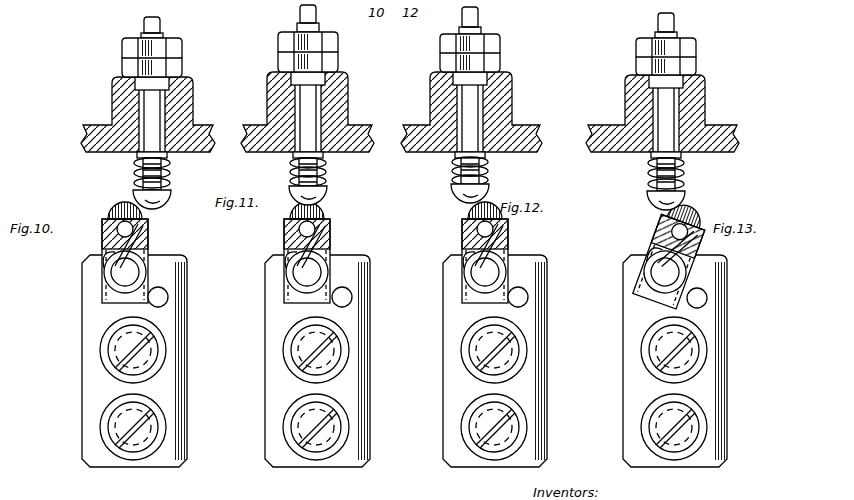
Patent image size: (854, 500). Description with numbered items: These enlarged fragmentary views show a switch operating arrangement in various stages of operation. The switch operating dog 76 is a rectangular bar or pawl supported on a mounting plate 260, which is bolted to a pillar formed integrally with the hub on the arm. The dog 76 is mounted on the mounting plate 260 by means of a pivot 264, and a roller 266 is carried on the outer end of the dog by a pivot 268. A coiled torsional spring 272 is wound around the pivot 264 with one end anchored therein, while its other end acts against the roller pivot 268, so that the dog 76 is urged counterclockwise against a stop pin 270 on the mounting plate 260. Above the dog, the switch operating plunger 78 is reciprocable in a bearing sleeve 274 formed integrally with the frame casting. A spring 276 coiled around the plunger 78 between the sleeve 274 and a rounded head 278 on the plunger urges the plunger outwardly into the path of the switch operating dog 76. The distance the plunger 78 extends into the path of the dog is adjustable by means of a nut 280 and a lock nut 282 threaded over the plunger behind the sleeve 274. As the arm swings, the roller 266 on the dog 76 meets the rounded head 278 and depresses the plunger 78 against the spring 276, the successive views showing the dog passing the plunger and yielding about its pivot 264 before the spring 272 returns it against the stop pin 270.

In FIG. 10, the switch operating dog 76 is at (150, 240).
In FIG. 11, the switch operating dog 76 is at (337, 243).
In FIG. 12, the switch operating dog 76 is at (462, 240).
In FIG. 13, the switch operating dog 76 is at (669, 261).
In FIG. 10, the switch operating plunger 78 is at (153, 115).
In FIG. 11, the switch operating plunger 78 is at (307, 107).
In FIG. 12, the switch operating plunger 78 is at (470, 107).
In FIG. 13, the switch operating plunger 78 is at (667, 108).
In FIG. 10, the mounting plate 260 is at (90, 323).
In FIG. 11, the mounting plate 260 is at (358, 333).
In FIG. 12, the mounting plate 260 is at (537, 343).
In FIG. 13, the mounting plate 260 is at (717, 347).
In FIG. 10, the pivot 264 is at (118, 278).
In FIG. 11, the pivot 264 is at (307, 272).
In FIG. 12, the pivot 264 is at (490, 272).
In FIG. 13, the pivot 264 is at (670, 275).
In FIG. 10, the roller 266 is at (127, 221).
In FIG. 11, the roller 266 is at (322, 213).
In FIG. 12, the roller 266 is at (503, 213).
In FIG. 13, the roller 266 is at (665, 220).
In FIG. 10, the pivot 268 is at (117, 222).
In FIG. 11, the pivot 268 is at (330, 228).
In FIG. 12, the pivot 268 is at (505, 230).
In FIG. 13, the pivot 268 is at (662, 233).
In FIG. 10, the stop pin 270 is at (167, 306).
In FIG. 11, the stop pin 270 is at (352, 300).
In FIG. 12, the stop pin 270 is at (527, 300).
In FIG. 13, the stop pin 270 is at (700, 300).
In FIG. 10, the coiled torsional spring 272 is at (147, 272).
In FIG. 11, the coiled torsional spring 272 is at (311, 246).
In FIG. 12, the coiled torsional spring 272 is at (489, 246).
In FIG. 13, the coiled torsional spring 272 is at (677, 248).
In FIG. 10, the bearing sleeve 274 is at (180, 108).
In FIG. 11, the bearing sleeve 274 is at (338, 107).
In FIG. 12, the bearing sleeve 274 is at (500, 108).
In FIG. 13, the bearing sleeve 274 is at (710, 115).
In FIG. 10, the spring 276 is at (140, 163).
In FIG. 11, the spring 276 is at (322, 163).
In FIG. 12, the spring 276 is at (460, 173).
In FIG. 13, the spring 276 is at (687, 168).
In FIG. 10, the rounded head 278 is at (177, 197).
In FIG. 11, the rounded head 278 is at (325, 200).
In FIG. 12, the rounded head 278 is at (460, 200).
In FIG. 13, the rounded head 278 is at (687, 198).
In FIG. 10, the nut 280 is at (120, 63).
In FIG. 11, the nut 280 is at (328, 58).
In FIG. 12, the nut 280 is at (500, 62).
In FIG. 13, the nut 280 is at (697, 67).
In FIG. 10, the lock nut 282 is at (122, 50).
In FIG. 11, the lock nut 282 is at (332, 40).
In FIG. 12, the lock nut 282 is at (497, 43).
In FIG. 13, the lock nut 282 is at (697, 50).